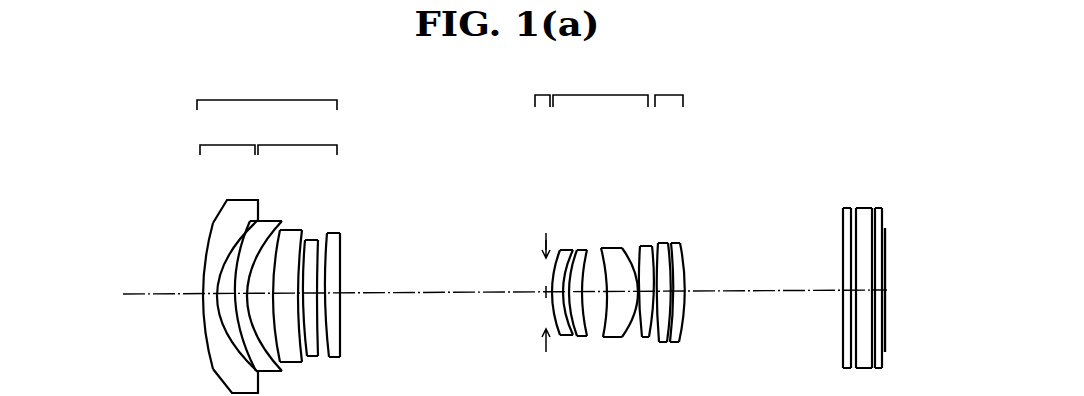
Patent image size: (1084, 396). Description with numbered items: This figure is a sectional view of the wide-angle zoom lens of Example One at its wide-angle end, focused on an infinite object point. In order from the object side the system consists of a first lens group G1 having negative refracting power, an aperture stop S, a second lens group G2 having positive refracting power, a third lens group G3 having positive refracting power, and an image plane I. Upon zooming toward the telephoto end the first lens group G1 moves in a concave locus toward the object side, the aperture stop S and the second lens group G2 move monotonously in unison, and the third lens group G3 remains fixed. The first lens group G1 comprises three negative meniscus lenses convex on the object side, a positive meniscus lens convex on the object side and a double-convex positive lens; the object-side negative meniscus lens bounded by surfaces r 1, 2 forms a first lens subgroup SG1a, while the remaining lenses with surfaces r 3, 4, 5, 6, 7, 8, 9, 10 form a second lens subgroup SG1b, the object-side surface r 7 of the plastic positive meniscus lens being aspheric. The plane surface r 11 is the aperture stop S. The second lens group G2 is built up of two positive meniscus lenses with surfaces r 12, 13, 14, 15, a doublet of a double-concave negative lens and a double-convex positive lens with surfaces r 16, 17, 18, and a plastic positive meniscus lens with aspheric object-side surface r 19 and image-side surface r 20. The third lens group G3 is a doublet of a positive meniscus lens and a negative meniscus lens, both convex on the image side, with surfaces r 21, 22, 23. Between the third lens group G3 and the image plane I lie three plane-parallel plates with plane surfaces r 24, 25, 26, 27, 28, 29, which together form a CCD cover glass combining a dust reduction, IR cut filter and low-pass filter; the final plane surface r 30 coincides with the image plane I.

The first lens group G1 is at (267, 90).
The first lens subgroup SG1a is at (227, 136).
The second lens subgroup SG1b is at (297, 136).
The aperture stop S is at (542, 211).
The second lens group G2 is at (600, 88).
The third lens group G3 is at (668, 88).
The radius of curvature of lens surface r1 1 is at (216, 222).
The radius of curvature of lens surface r2 2 is at (238, 200).
The radius of curvature of lens surface r3 3 is at (257, 221).
The radius of curvature of lens surface r4 4 is at (273, 220).
The radius of curvature of lens surface r5 5 is at (281, 230).
The radius of curvature of lens surface r6 6 is at (300, 230).
The radius of curvature of lens surface r7 7 is at (306, 240).
The radius of curvature of lens surface r8 8 is at (318, 240).
The radius of curvature of lens surface r9 9 is at (329, 233).
The radius of curvature of lens surface r10 10 is at (340, 233).
The radius of curvature of lens surface r11 11 is at (536, 233).
The radius of curvature of lens surface r12 12 is at (553, 248).
The radius of curvature of lens surface r13 13 is at (563, 249).
The radius of curvature of lens surface r14 14 is at (578, 250).
The radius of curvature of lens surface r15 15 is at (588, 250).
The radius of curvature of lens surface r16 16 is at (601, 248).
The radius of curvature of lens surface r17 17 is at (615, 248).
The radius of curvature of lens surface r18 18 is at (639, 246).
The radius of curvature of lens surface r19 19 is at (646, 246).
The radius of curvature of lens surface r20 20 is at (659, 243).
The radius of curvature of lens surface r21 21 is at (666, 243).
The radius of curvature of lens surface r22 22 is at (673, 242).
The radius of curvature of lens surface r23 23 is at (683, 246).
The radius of curvature of lens surface r24 24 is at (841, 222).
The radius of curvature of lens surface r25 25 is at (843, 207).
The radius of curvature of lens surface r26 26 is at (857, 207).
The radius of curvature of lens surface r27 27 is at (873, 207).
The radius of curvature of lens surface r28 28 is at (878, 207).
The radius of curvature of lens surface r29 29 is at (882, 220).
The radius of curvature of lens surface r30 30 is at (885, 232).
The image plane I is at (885, 262).